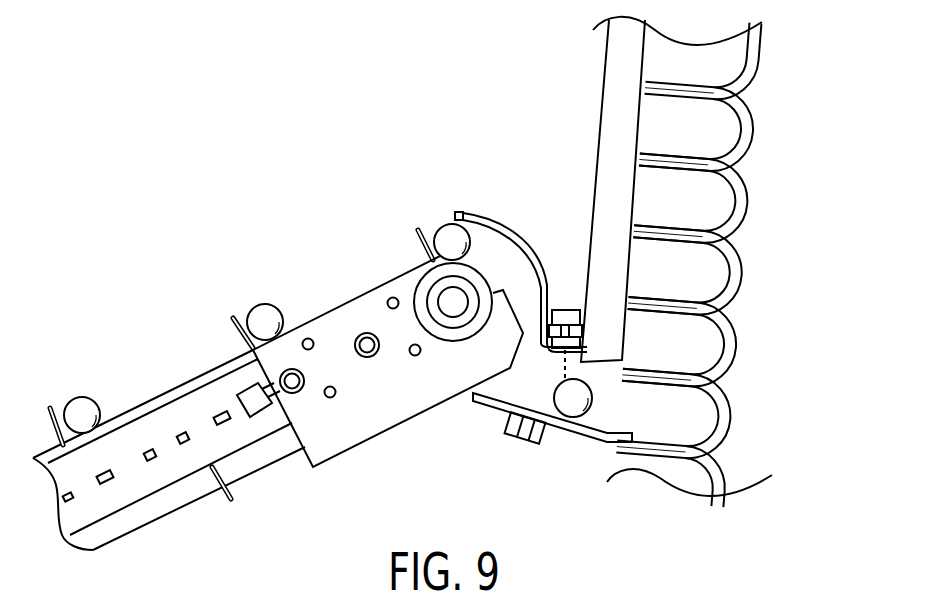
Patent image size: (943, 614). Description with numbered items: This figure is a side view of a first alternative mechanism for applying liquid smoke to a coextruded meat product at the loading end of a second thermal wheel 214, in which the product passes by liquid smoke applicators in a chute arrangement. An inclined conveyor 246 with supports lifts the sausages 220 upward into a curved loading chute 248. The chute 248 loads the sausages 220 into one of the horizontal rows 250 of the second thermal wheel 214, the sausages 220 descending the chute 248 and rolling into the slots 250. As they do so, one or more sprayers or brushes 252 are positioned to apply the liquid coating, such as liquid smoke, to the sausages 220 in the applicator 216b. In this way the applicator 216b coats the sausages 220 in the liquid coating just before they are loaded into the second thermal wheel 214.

The second thermal wheel 214 is at (557, 127).
The applicator 216b is at (493, 430).
The sausages 220 is at (82, 415).
The inclined conveyor 246 is at (158, 475).
The curved loading chute 248 is at (520, 277).
The horizontal rows 250 is at (692, 407).
The sprayers or brushes 252 is at (567, 317).